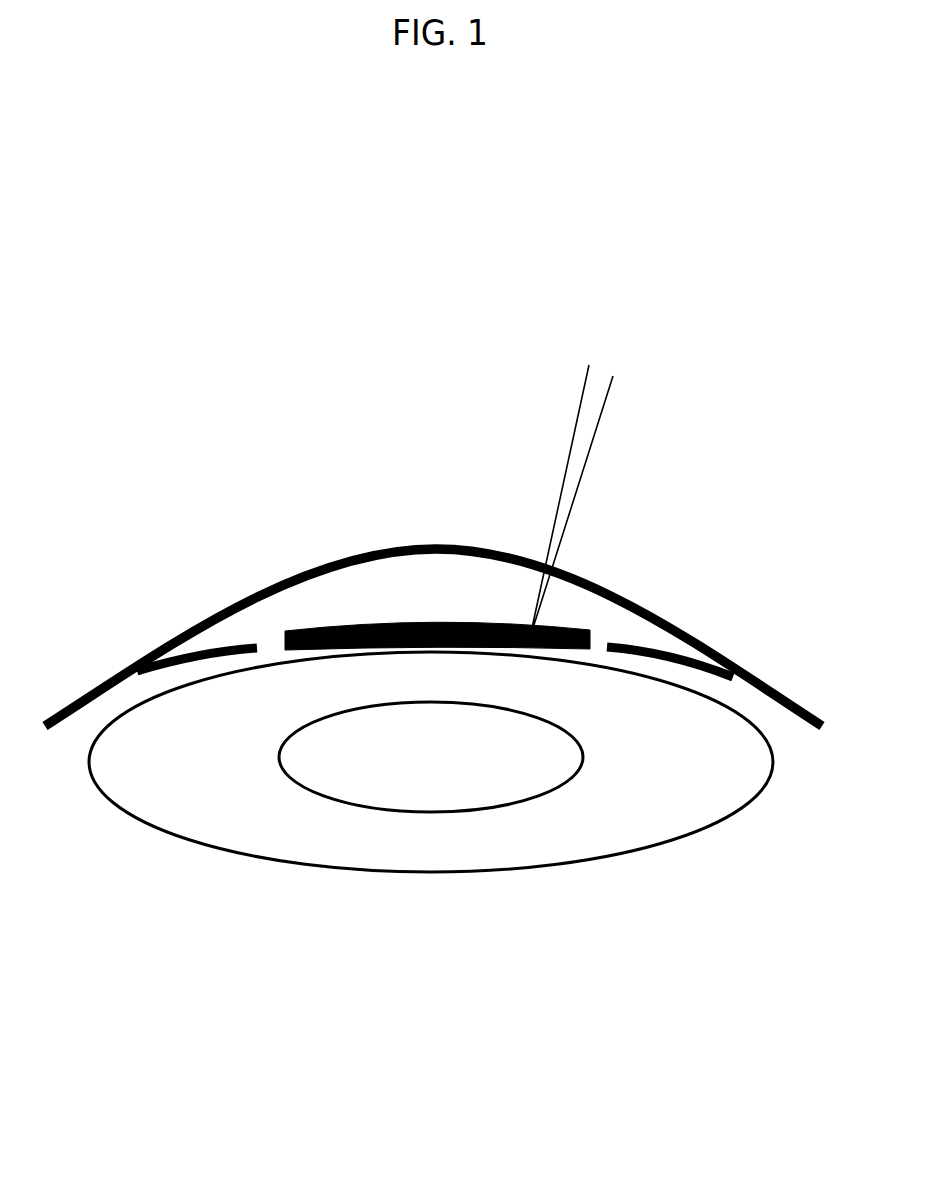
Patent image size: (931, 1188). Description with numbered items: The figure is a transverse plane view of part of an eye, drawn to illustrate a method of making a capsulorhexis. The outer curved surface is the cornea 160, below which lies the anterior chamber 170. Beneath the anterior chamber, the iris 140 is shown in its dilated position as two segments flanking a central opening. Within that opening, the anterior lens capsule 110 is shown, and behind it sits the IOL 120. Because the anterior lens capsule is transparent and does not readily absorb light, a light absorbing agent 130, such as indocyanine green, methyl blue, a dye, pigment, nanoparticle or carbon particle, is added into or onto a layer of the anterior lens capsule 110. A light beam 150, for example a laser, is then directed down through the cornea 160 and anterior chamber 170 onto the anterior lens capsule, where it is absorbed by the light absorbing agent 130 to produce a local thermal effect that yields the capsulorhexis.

The lens capsule 110 is at (213, 848).
The IOL 120 is at (568, 787).
The light absorbing agent 130 is at (330, 627).
The dilated iris 140 is at (245, 643).
The light beam 150 is at (607, 397).
The cornea 160 is at (390, 547).
The anterior chamber 170 is at (465, 608).